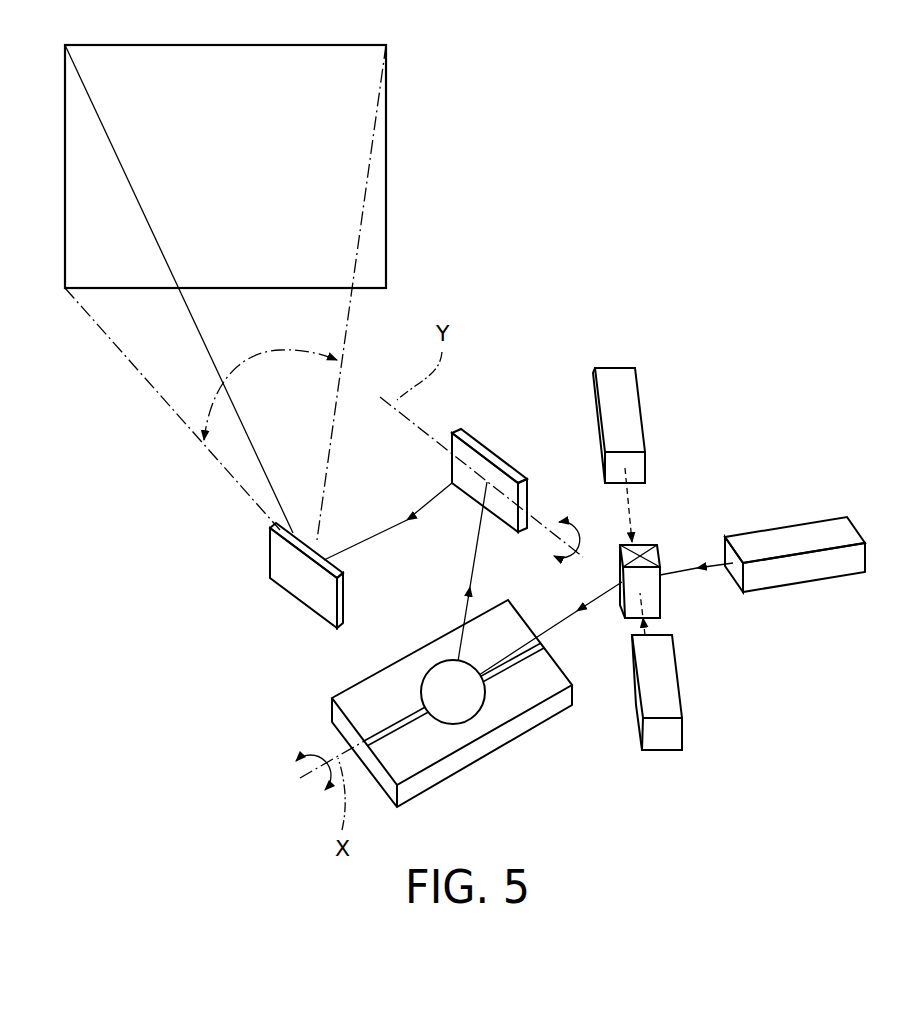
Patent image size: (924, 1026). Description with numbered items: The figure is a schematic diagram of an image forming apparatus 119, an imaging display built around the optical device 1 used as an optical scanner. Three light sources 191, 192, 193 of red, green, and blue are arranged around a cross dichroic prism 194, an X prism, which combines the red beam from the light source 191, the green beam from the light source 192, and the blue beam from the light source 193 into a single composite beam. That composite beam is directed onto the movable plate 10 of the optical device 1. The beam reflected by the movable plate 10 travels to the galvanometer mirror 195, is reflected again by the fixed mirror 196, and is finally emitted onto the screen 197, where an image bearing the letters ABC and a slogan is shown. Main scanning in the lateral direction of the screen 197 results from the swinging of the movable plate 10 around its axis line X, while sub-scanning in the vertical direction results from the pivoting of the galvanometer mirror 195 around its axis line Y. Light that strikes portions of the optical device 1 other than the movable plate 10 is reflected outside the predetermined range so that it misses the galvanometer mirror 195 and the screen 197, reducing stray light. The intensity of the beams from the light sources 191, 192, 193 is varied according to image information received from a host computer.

The screen 197 is at (386, 155).
The image forming apparatus 119 is at (752, 277).
The fixed mirror 196 is at (293, 580).
The galvanometer mirror 195 is at (477, 443).
The light source 191 is at (628, 403).
The light source 192 is at (798, 535).
The light source 193 is at (663, 678).
The cross dichroic prism 194 is at (652, 560).
The optical device 1 is at (503, 742).
The movable plate 10 is at (435, 683).